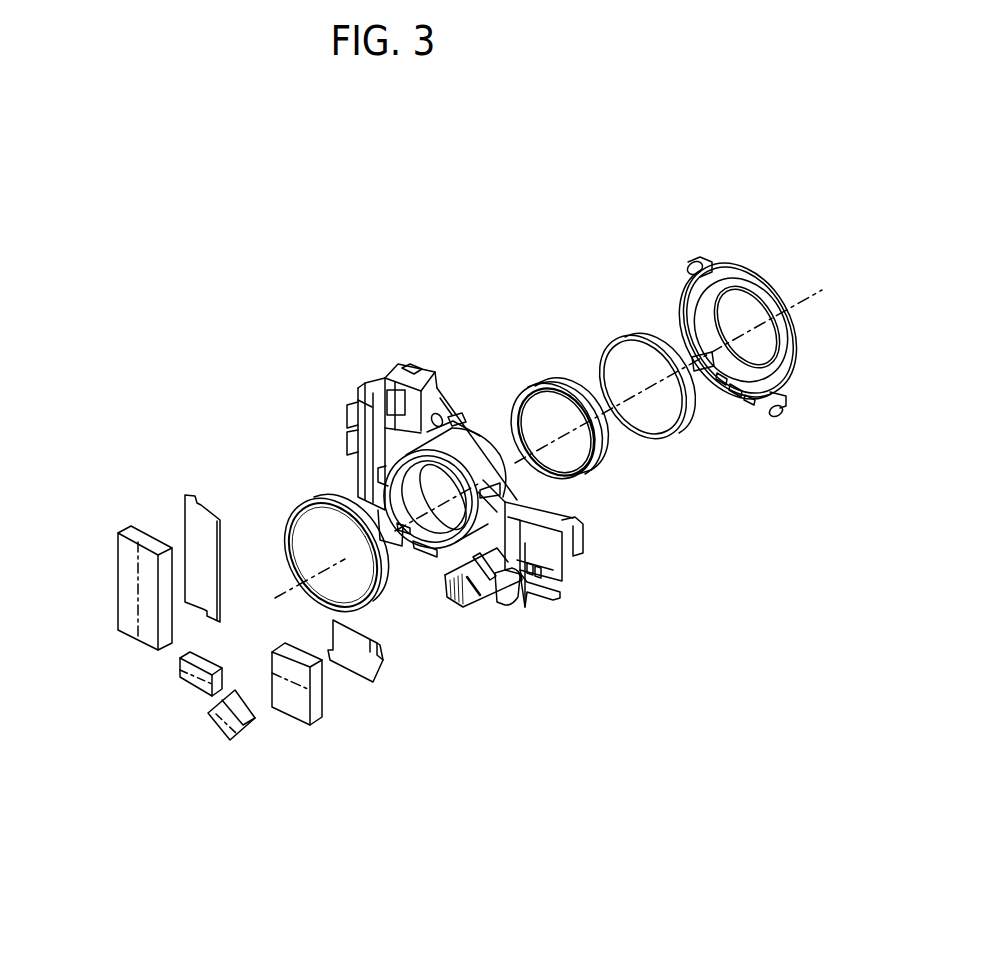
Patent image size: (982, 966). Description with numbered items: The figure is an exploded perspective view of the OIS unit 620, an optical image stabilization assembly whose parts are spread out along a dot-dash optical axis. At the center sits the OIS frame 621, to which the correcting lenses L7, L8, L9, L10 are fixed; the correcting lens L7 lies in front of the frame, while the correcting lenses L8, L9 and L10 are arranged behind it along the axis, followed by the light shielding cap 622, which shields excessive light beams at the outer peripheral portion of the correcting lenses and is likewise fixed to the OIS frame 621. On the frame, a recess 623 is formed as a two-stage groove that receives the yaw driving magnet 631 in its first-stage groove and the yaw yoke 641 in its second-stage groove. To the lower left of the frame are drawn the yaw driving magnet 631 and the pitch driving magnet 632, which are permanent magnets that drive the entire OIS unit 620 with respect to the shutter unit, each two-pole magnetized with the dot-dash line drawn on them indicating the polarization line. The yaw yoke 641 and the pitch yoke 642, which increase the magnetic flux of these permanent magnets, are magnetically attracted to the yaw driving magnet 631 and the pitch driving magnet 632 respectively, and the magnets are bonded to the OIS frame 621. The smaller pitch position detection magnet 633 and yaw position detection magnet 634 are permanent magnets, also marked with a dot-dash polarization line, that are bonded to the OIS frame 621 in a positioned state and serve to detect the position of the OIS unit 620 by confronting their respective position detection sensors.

The OIS unit 620 is at (318, 318).
The OIS frame 621 is at (380, 380).
The light shielding cap 622 is at (747, 280).
The recess 623 is at (365, 404).
The yaw driving magnet 631 is at (132, 538).
The pitch driving magnet 632 is at (296, 703).
The pitch position detection magnet 633 is at (187, 680).
The yaw position detection magnet 634 is at (232, 732).
The yaw yoke 641 is at (197, 532).
The pitch yoke 642 is at (363, 660).
The correcting lens L7 is at (312, 529).
The correcting lens L8 is at (527, 405).
The correcting lens L9 is at (550, 378).
The correcting lens L10 is at (608, 348).